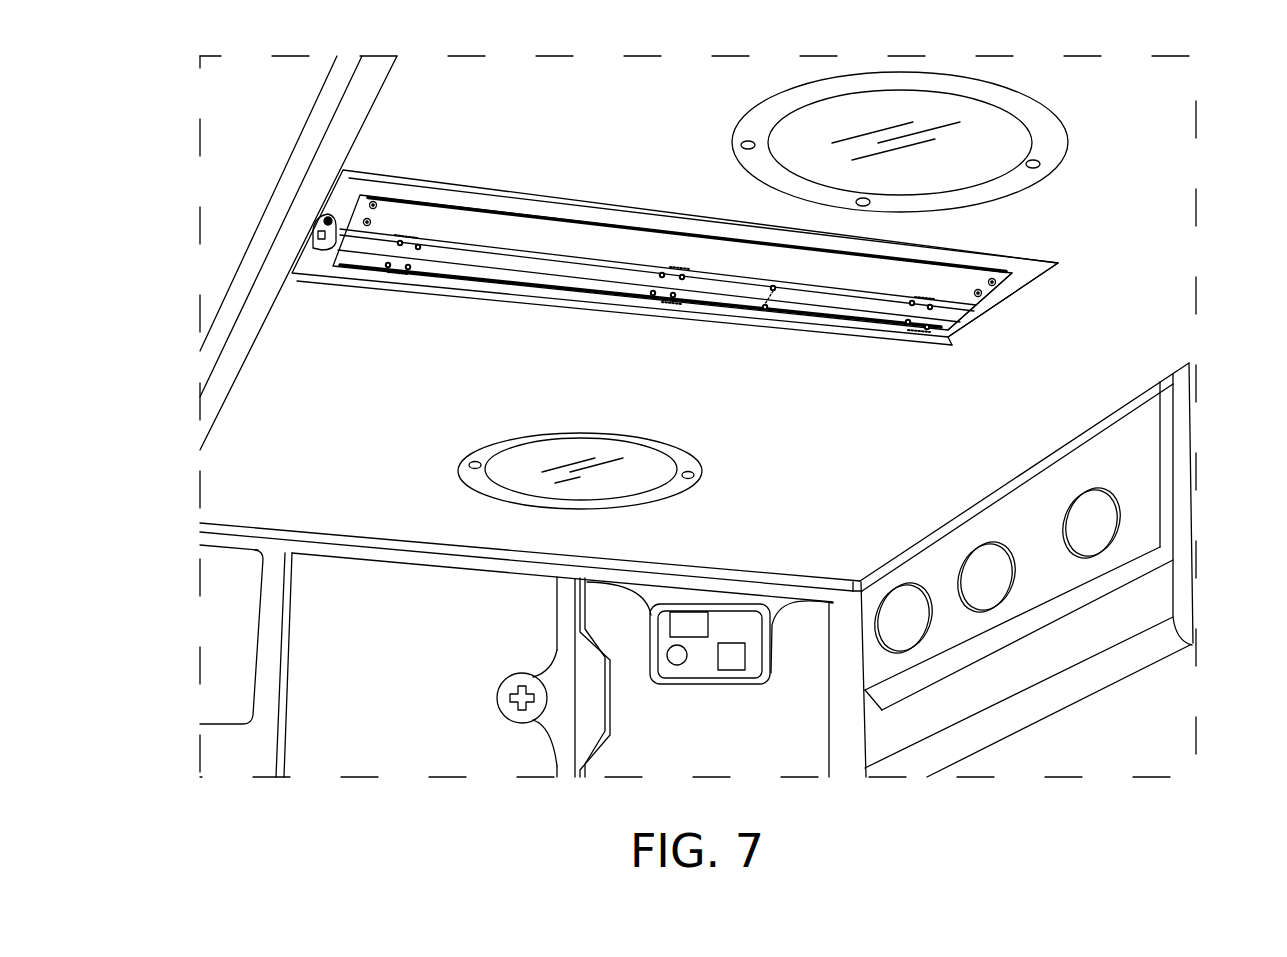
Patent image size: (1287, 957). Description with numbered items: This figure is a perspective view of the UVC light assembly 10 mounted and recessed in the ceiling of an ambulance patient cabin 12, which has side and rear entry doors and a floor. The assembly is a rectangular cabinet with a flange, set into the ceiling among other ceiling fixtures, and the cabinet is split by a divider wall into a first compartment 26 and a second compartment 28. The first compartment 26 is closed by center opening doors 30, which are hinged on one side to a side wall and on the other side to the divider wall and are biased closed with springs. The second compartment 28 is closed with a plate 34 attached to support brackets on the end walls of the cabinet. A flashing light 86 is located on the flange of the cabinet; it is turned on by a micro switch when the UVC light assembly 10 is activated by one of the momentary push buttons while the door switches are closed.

The UVC light assembly 10 is at (570, 163).
The ambulance patient cabin 12 is at (1047, 352).
The first compartment 26 is at (953, 357).
The second compartment 28 is at (1014, 297).
The center opening doors 30 is at (852, 317).
The plate 34 is at (878, 278).
The flashing light 86 is at (313, 238).